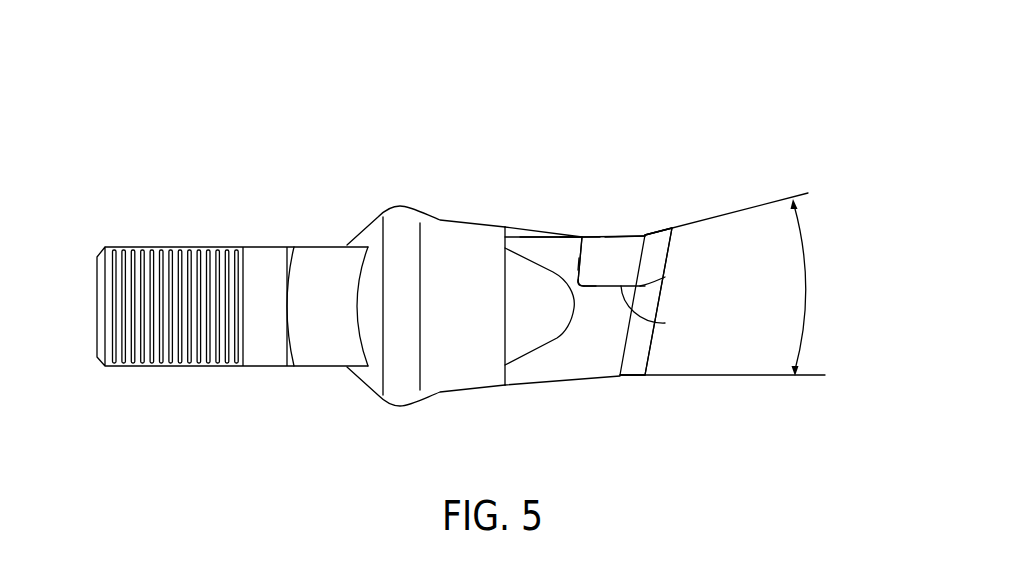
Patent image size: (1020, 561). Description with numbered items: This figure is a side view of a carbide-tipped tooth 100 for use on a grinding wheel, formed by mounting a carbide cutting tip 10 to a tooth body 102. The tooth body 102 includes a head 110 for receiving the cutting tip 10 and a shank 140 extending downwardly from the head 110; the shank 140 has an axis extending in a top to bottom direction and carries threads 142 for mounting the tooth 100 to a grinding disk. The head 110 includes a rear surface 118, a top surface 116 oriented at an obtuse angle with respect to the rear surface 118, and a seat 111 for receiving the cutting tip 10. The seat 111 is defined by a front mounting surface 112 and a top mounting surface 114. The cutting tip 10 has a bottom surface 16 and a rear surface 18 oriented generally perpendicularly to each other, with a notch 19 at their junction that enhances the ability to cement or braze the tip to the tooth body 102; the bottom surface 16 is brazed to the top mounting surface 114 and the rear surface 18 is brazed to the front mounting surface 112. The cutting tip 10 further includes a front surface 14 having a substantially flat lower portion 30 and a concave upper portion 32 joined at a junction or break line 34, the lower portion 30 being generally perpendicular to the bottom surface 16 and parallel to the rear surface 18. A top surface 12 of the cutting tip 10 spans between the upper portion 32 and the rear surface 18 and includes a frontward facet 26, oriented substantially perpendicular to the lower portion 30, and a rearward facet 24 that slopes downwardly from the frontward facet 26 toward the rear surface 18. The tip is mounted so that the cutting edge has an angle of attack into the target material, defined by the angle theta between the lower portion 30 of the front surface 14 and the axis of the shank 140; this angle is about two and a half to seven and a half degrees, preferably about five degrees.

The carbide-tipped tooth 100 is at (717, 127).
The tooth body 102 is at (402, 220).
The shank 140 is at (262, 262).
The threads 142 is at (171, 254).
The head 110 is at (538, 248).
The seat 111 is at (591, 297).
The front mounting surface 112 is at (665, 323).
The top mounting surface 114 is at (577, 247).
The top surface 116 is at (652, 353).
The rear surface 118 is at (590, 380).
The carbide cutting tip 10 is at (699, 247).
The top surface 12 is at (674, 264).
The front surface 14 is at (647, 228).
The bottom surface 16 is at (587, 237).
The rear surface 18 is at (583, 284).
The notch 19 is at (580, 263).
The rearward facet 24 is at (665, 277).
The frontward facet 26 is at (674, 230).
The lower portion 30 is at (580, 235).
The upper portion 32 is at (620, 237).
The junction or break line 34 is at (585, 237).